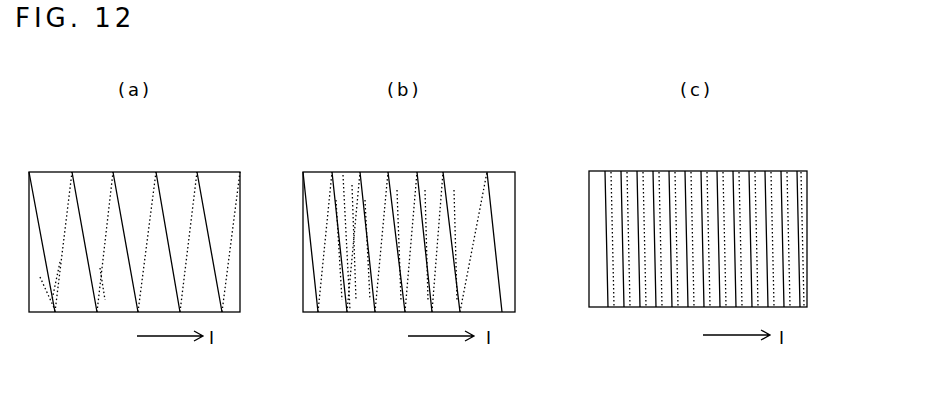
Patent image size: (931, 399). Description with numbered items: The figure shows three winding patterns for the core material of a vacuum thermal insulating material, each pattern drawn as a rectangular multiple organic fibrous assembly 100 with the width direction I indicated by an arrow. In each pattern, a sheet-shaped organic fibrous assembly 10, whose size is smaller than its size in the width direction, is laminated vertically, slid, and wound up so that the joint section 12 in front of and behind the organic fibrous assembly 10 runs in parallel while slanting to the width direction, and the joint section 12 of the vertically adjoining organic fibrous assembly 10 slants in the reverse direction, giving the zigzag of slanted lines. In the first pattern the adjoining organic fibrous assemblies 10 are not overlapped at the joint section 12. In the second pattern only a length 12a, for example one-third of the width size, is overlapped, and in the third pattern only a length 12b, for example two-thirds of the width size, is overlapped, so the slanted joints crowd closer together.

The multiple organic fibrous assembly 100 is at (204, 148).
The organic fibrous assembly 10 is at (94, 182).
The joint section 12 is at (51, 259).
The length 12a is at (338, 215).
The length 12b is at (610, 225).